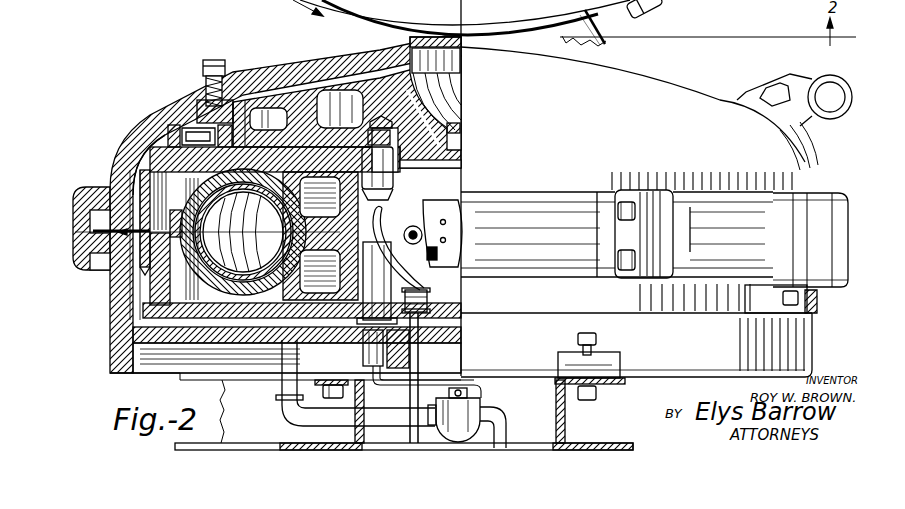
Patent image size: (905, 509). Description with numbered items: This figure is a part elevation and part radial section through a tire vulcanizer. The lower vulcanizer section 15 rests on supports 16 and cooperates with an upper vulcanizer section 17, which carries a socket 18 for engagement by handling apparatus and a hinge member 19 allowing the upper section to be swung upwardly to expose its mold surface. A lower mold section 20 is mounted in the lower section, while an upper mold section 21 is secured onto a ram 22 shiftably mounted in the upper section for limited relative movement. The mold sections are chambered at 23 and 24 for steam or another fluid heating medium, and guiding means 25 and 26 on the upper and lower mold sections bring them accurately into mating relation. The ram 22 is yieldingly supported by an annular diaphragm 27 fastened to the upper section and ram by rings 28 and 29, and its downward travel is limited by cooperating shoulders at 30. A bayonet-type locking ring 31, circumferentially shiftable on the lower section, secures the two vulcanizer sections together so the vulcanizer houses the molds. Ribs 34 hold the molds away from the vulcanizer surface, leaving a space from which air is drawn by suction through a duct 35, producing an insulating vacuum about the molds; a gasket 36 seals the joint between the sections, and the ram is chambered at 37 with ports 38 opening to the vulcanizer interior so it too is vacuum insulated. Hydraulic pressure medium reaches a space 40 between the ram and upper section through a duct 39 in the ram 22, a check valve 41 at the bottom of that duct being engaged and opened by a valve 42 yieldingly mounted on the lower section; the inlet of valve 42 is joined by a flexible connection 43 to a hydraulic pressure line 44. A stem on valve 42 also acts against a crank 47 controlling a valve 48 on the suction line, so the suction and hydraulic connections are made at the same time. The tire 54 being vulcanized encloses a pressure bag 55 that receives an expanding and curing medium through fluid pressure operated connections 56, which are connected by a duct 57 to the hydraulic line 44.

The lower vulcanizer section 15 is at (153, 288).
The supports 16 is at (590, 25).
The upper vulcanizer section 17 is at (136, 135).
The socket 18 is at (456, 98).
The hinge member 19 is at (814, 96).
The lower mold section 20 is at (112, 326).
The upper mold section 21 is at (147, 167).
The ram 22 is at (275, 108).
The chamber of lower mold section 23 is at (200, 332).
The chamber of upper mold section 24 is at (184, 134).
The guiding means on upper mold section 25 is at (144, 244).
The guiding means on lower mold section 26 is at (380, 212).
The annular diaphragm 27 is at (204, 128).
The ring 28 is at (175, 134).
The ring 29 is at (238, 135).
The cooperating shoulders 30 is at (202, 108).
The locking ring 31 is at (78, 226).
The ribs 34 is at (116, 170).
The duct 35 is at (283, 386).
The gasket 36 is at (96, 268).
The ram chamber 37 is at (322, 100).
The ports 38 is at (300, 133).
The duct 39 is at (395, 86).
The space 40 is at (362, 66).
The check valve 41 is at (462, 163).
The valve 42 is at (361, 333).
The flexible connection 43 is at (384, 222).
The hydraulic pressure line 44 is at (419, 345).
The crank 47 is at (394, 388).
The valve 48 is at (462, 414).
The tire 54 is at (216, 300).
The pressure bag 55 is at (258, 300).
The connections 56 is at (434, 246).
The duct 57 is at (452, 293).